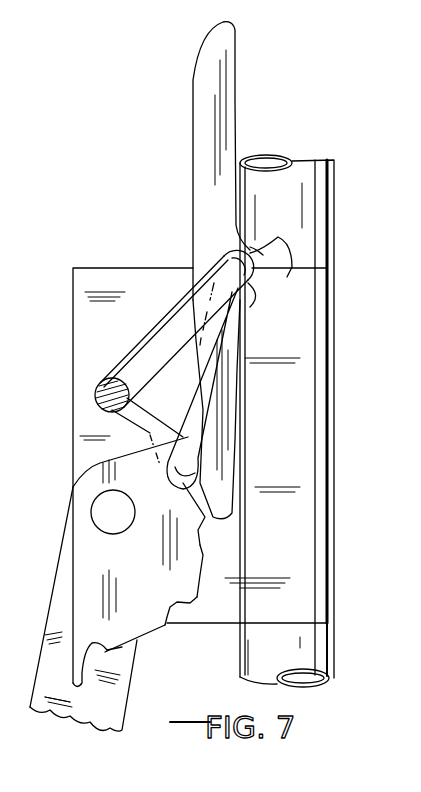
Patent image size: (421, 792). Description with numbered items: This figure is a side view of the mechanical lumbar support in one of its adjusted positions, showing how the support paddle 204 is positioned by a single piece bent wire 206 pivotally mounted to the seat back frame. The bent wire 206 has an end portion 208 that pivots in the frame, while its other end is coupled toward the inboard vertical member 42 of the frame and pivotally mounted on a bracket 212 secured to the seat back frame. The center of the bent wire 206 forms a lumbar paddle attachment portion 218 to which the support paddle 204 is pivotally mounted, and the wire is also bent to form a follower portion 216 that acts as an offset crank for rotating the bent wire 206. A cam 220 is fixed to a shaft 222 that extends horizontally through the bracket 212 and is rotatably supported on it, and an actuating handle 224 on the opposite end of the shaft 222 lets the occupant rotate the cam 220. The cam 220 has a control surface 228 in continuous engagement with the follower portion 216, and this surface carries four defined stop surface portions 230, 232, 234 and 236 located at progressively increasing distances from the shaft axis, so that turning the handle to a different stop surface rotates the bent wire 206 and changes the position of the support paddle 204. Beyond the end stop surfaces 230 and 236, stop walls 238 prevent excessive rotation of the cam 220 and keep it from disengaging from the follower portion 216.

The inboard vertical member 42 is at (336, 183).
The support paddle 204 is at (203, 115).
The bent wire 206 is at (165, 305).
The end portion 208 is at (96, 388).
The bracket 212 is at (160, 267).
The follower portion 216 is at (198, 488).
The lumbar paddle attachment portion 218 is at (259, 296).
The cam 220 is at (100, 470).
The shaft 222 is at (88, 520).
The actuating handle 224 is at (138, 657).
The control surface 228 is at (200, 573).
The stop surface portion 230 is at (185, 444).
The stop surface portion 232 is at (200, 545).
The stop surface portion 234 is at (188, 610).
The stop surface portion 236 is at (130, 675).
The stop wall 238 is at (93, 697).